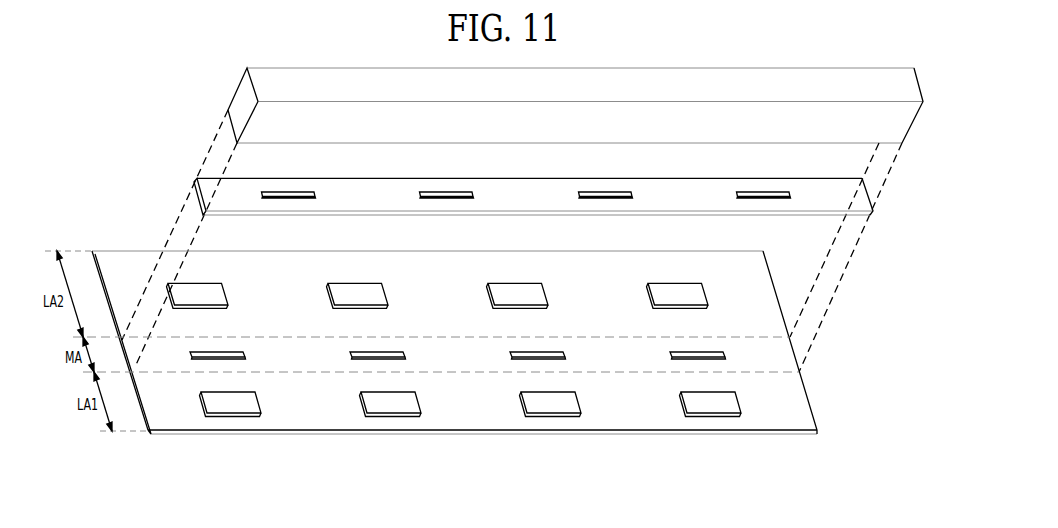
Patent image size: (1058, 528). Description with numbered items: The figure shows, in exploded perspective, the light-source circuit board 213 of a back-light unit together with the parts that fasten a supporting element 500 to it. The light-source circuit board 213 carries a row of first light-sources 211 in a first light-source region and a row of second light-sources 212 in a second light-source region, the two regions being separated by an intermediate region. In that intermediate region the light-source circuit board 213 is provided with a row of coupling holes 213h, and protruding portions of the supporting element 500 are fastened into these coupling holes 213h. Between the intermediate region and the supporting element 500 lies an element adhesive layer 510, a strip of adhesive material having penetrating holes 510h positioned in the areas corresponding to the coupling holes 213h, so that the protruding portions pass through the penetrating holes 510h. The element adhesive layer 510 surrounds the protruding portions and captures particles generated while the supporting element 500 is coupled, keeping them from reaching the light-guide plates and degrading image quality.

The supporting element 500 is at (898, 122).
The element adhesive layer 510 is at (867, 198).
The penetrating hole 510h is at (259, 198).
The light-source circuit board 213 is at (620, 415).
The second light-source 212 is at (502, 311).
The coupling hole 213h is at (354, 363).
The first light-source 211 is at (232, 420).